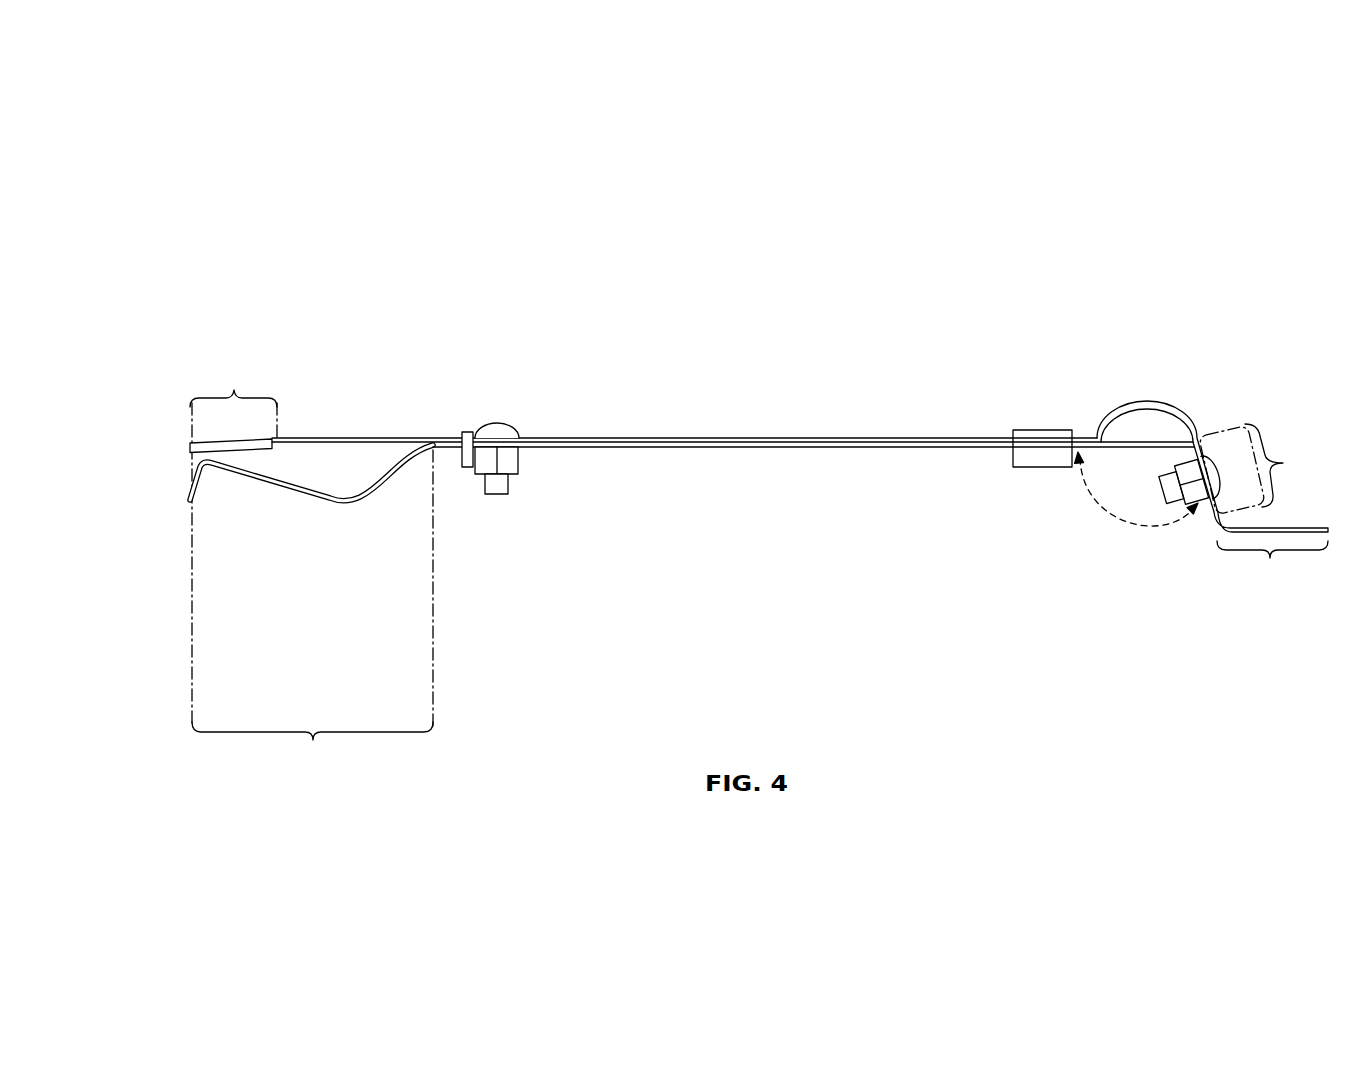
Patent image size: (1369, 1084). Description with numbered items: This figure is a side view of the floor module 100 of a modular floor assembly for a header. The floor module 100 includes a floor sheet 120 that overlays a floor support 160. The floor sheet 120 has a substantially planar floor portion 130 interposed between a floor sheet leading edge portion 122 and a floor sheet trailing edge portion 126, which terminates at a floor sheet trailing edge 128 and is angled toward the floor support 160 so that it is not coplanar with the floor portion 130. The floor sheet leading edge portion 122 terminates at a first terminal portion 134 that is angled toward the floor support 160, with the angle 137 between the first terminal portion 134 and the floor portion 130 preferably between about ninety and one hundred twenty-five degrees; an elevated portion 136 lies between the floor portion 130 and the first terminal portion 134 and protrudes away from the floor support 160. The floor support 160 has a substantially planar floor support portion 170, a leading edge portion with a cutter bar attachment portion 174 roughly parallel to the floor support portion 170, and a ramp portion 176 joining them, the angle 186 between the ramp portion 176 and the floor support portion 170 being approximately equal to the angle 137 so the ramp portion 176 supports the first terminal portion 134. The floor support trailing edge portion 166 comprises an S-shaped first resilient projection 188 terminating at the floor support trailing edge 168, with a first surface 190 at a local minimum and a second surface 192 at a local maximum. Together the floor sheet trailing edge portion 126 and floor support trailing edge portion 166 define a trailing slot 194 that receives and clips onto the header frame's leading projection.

The floor module 100 is at (260, 200).
The floor sheet 120 is at (732, 409).
The floor sheet leading edge portion 122 is at (1212, 487).
The floor sheet trailing edge portion 126 is at (234, 390).
The floor sheet trailing edge 128 is at (186, 450).
The floor portion 130 is at (828, 437).
The first terminal portion 134 is at (1283, 463).
The elevated portion 136 is at (1135, 401).
The angle 137 is at (1120, 526).
The floor support 160 is at (813, 480).
The floor support trailing edge portion 166 is at (313, 740).
The floor support trailing edge 168 is at (148, 507).
The floor support portion 170 is at (903, 449).
The cutter bar attachment portion 174 is at (1270, 558).
The ramp portion 176 is at (1216, 517).
The angle 186 is at (1118, 514).
The first resilient projection 188 is at (265, 511).
The first surface 190 is at (356, 505).
The second surface 192 is at (192, 466).
The trailing slot 194 is at (190, 457).